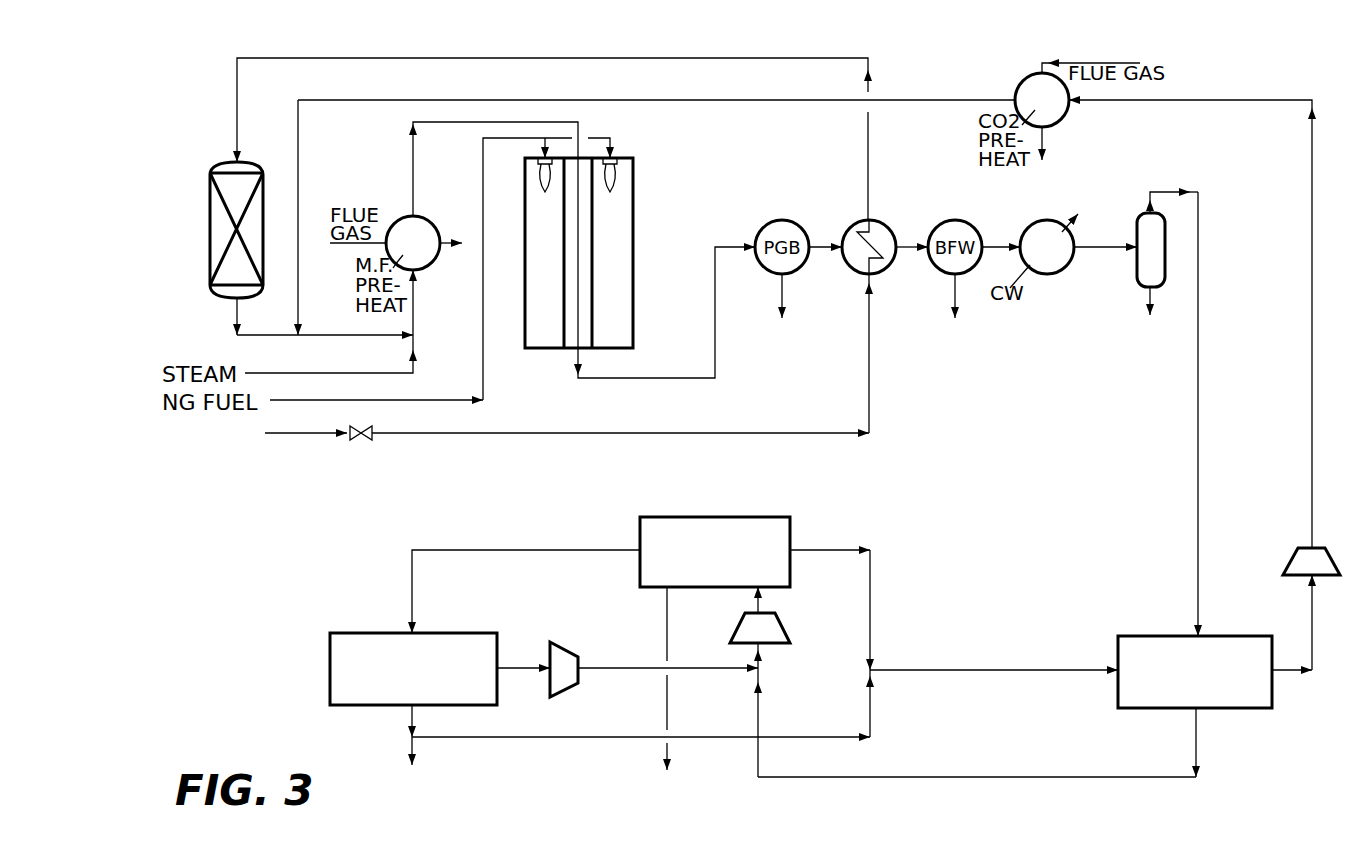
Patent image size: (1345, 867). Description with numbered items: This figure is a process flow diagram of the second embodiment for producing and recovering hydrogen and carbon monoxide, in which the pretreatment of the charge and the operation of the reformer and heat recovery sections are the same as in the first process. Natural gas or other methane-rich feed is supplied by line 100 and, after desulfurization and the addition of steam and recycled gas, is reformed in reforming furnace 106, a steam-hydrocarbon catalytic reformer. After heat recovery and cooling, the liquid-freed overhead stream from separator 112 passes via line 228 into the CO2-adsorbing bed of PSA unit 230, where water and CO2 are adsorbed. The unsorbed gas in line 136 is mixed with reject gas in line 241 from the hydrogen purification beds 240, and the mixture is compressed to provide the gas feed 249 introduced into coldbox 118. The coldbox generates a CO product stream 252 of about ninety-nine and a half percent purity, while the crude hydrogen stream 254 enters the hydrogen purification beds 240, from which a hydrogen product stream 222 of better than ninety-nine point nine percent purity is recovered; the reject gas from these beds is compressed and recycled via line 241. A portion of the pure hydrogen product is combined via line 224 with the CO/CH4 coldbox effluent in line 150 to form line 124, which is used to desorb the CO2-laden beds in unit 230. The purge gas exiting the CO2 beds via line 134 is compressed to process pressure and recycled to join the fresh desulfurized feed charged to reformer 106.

The feed line 100 is at (292, 433).
The reforming furnace 106 is at (637, 212).
The separator 112 is at (1137, 255).
The coldbox 118 is at (728, 583).
The desorption gas line 124 is at (1060, 668).
The purge gas line 134 is at (1306, 630).
The unsorbed gas line 136 is at (1022, 777).
The coldbox effluent line 150 is at (873, 620).
The hydrogen product stream 222 is at (418, 748).
The hydrogen recycle line 224 is at (604, 736).
The separator overhead line 228 is at (1198, 372).
The CO2-adsorbing PSA unit 230 is at (1160, 675).
The hydrogen purification beds 240 is at (445, 632).
The reject gas line 241 is at (605, 666).
The coldbox gas feed 249 is at (762, 606).
The CO product stream 252 is at (670, 753).
The crude hydrogen stream 254 is at (531, 535).